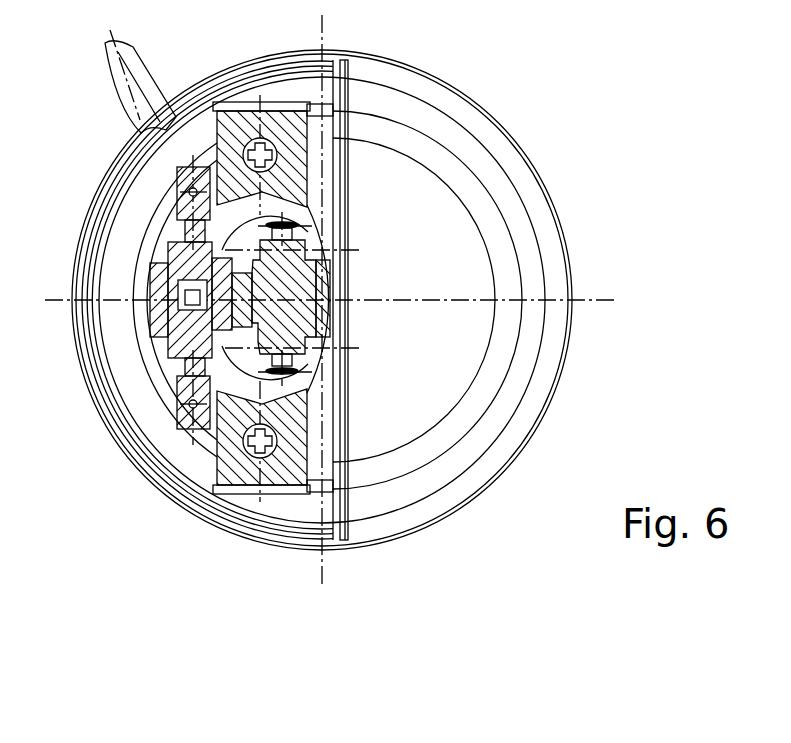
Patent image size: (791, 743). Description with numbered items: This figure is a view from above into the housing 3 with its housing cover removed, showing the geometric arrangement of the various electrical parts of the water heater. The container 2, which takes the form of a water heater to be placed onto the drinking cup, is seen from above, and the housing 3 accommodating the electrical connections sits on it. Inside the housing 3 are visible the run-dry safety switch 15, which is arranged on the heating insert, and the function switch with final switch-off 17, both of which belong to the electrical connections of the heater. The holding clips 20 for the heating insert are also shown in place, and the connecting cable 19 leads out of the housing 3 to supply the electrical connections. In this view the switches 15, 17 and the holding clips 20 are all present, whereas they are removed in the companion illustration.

The container 2 is at (470, 93).
The housing 3 is at (283, 53).
The run-dry safety switch 15 is at (310, 253).
The function switch with final switch-off 17 is at (170, 347).
The connecting cable 19 is at (143, 82).
The holding clips 20 is at (212, 458).